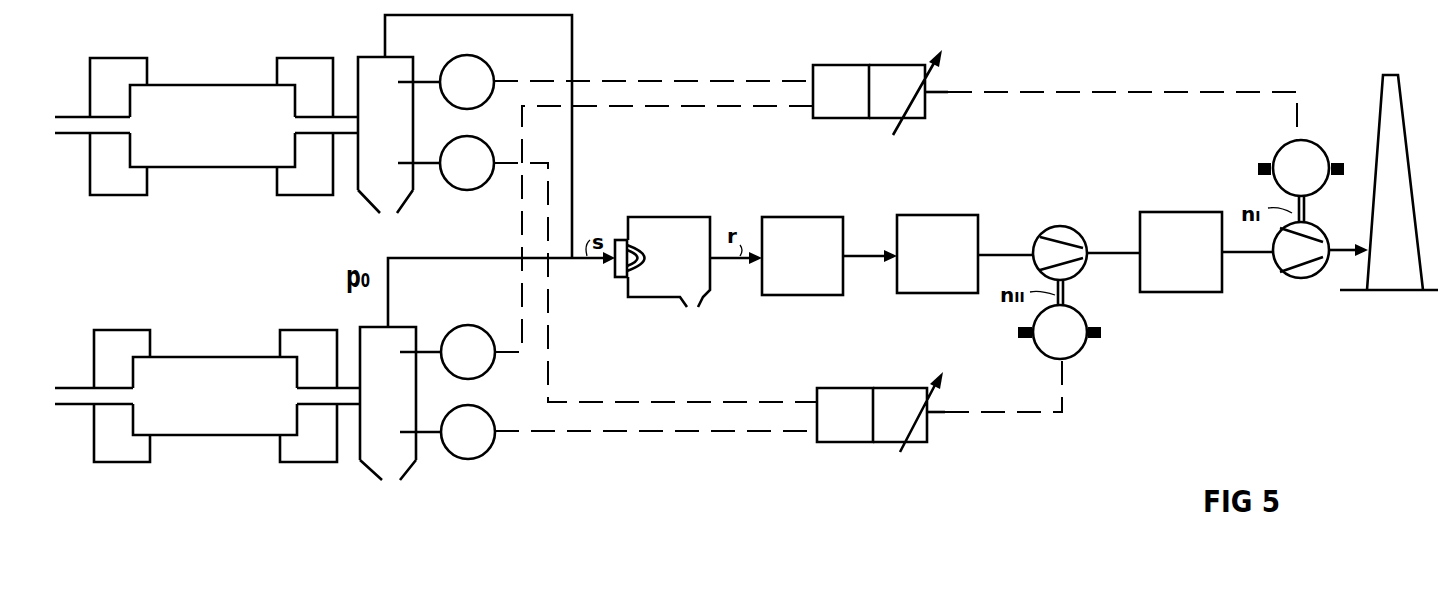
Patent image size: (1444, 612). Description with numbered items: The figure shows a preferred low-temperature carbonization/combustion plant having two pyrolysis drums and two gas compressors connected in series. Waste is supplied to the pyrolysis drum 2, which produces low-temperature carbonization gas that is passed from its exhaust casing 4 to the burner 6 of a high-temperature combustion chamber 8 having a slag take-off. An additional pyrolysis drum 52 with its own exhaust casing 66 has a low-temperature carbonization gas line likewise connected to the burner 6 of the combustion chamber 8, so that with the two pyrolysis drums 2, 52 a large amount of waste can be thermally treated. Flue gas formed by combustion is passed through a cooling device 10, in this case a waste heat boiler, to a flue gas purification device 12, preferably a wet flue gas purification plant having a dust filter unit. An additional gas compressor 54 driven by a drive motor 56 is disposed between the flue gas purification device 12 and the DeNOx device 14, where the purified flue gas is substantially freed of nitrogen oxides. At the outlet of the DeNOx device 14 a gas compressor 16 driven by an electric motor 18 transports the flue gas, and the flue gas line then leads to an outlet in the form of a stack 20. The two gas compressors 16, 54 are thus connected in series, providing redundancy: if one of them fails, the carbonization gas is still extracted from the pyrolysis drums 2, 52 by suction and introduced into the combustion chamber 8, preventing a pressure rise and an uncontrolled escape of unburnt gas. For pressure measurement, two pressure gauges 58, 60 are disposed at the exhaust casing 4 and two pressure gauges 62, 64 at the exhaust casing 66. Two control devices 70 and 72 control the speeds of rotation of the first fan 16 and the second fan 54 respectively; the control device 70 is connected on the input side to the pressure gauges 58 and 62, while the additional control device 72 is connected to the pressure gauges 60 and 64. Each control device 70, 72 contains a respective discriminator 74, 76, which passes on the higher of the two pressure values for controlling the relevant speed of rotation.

The pyrolysis drum 2 is at (222, 85).
The additional pyrolysis drum 52 is at (222, 357).
The exhaust casing 4 is at (375, 57).
The exhaust casing 66 is at (400, 472).
The pressure gauge 58 is at (481, 58).
The pressure gauge 60 is at (458, 190).
The pressure gauge 62 is at (475, 305).
The pressure gauge 64 is at (482, 407).
The burner 6 is at (621, 240).
The high-temperature combustion chamber 8 is at (680, 217).
The cooling device 10 is at (806, 194).
The flue gas purification device 12 is at (946, 192).
The DeNOx device 14 is at (1186, 190).
The gas compressor 16 is at (1332, 210).
The electric motor 18 is at (1283, 142).
The stack 20 is at (1381, 98).
The additional gas compressor 54 is at (1058, 226).
The drive motor 56 is at (1080, 356).
The control device 70 is at (895, 65).
The additional control device 72 is at (897, 388).
The discriminator 74 is at (848, 78).
The discriminator 76 is at (852, 406).